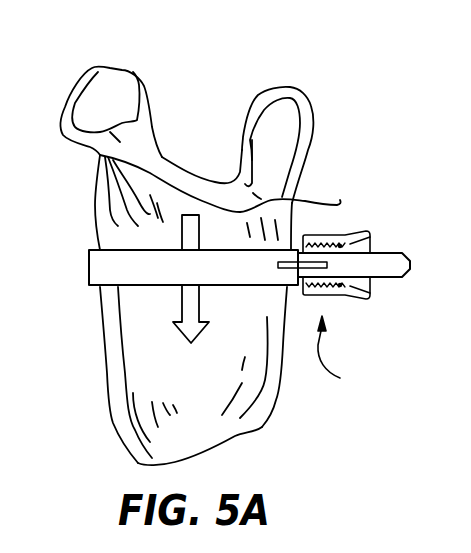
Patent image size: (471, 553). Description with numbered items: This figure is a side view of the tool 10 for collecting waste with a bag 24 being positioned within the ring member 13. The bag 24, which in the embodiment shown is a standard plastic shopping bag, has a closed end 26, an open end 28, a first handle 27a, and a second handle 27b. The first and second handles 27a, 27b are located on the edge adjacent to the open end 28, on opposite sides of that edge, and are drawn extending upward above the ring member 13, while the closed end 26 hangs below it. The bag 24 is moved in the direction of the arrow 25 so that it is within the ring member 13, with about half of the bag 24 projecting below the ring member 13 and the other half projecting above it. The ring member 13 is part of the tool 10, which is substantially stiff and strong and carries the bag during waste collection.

The tool 10 is at (341, 347).
The ring member 13 is at (102, 268).
The bag 24 is at (112, 222).
The arrow 25 is at (183, 307).
The closed end 26 is at (138, 463).
The first handle 27a is at (287, 86).
The second handle 27b is at (143, 78).
The open end 28 is at (298, 194).